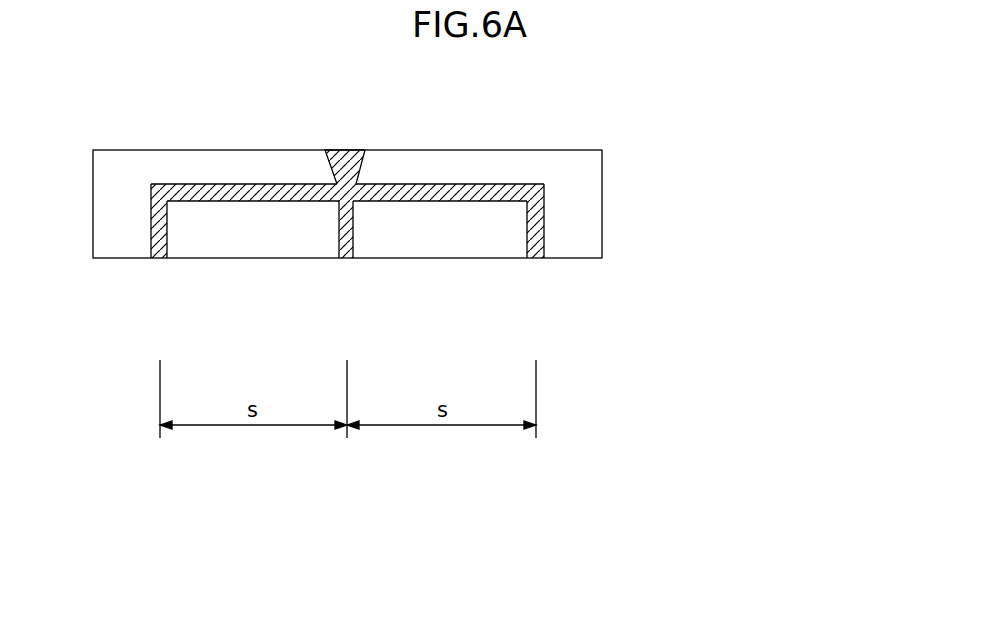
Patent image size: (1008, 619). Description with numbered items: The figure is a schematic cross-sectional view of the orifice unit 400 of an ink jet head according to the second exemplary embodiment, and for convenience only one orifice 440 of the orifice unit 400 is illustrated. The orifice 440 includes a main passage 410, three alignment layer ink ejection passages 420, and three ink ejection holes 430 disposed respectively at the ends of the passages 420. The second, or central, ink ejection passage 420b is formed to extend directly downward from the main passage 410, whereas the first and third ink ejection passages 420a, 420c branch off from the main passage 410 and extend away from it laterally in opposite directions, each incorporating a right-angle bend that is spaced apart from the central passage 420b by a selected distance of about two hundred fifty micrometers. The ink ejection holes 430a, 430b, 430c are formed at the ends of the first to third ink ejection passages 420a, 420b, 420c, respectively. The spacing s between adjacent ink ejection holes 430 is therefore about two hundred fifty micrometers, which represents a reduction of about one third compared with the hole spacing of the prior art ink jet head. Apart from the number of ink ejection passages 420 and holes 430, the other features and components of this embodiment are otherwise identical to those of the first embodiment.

The orifice unit 400 is at (602, 202).
The main passage 410 is at (343, 152).
The ink ejection passages 420 is at (347, 271).
The first ink ejection passage 420a is at (277, 201).
The second ink ejection passage 420b is at (347, 250).
The third ink ejection passage 420c is at (448, 255).
The ink ejection holes 430 is at (491, 278).
The first ink ejection hole 430a is at (160, 258).
The second ink ejection hole 430b is at (345, 258).
The third ink ejection hole 430c is at (532, 258).
The orifice 440 is at (491, 248).